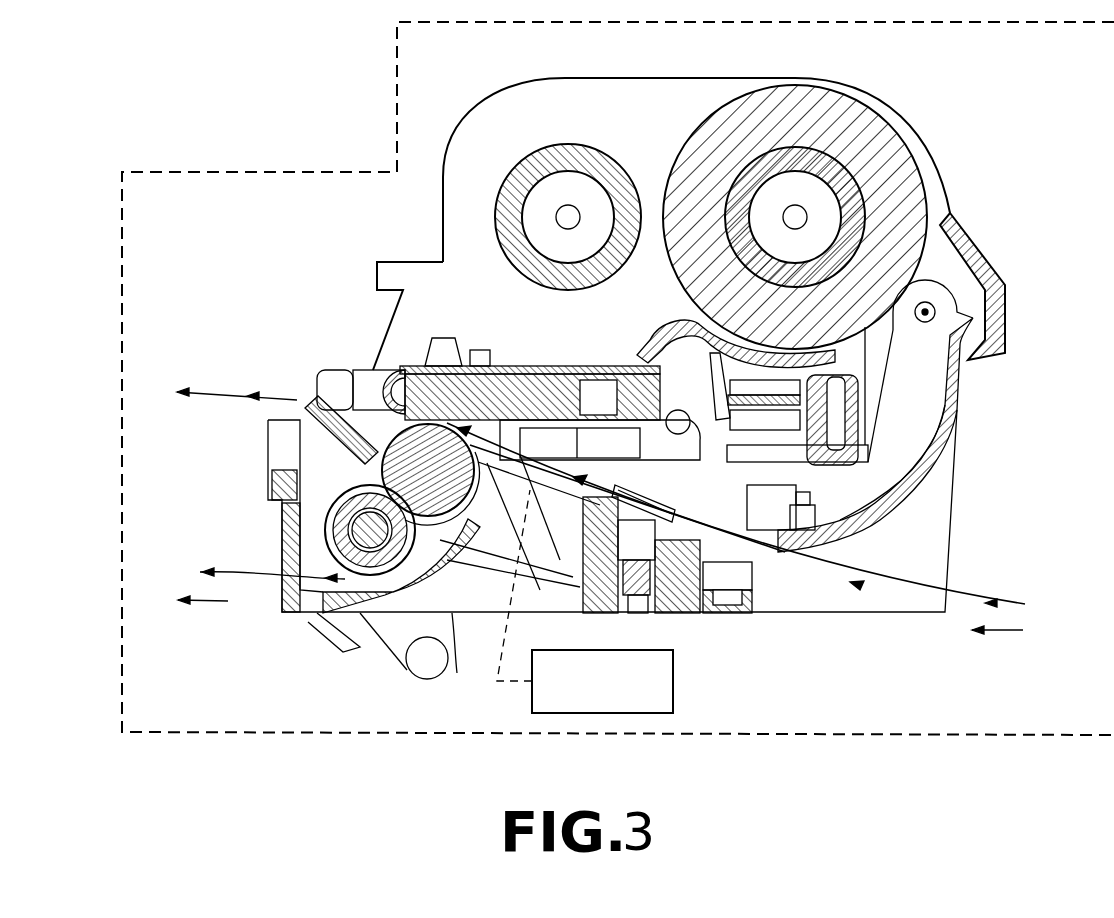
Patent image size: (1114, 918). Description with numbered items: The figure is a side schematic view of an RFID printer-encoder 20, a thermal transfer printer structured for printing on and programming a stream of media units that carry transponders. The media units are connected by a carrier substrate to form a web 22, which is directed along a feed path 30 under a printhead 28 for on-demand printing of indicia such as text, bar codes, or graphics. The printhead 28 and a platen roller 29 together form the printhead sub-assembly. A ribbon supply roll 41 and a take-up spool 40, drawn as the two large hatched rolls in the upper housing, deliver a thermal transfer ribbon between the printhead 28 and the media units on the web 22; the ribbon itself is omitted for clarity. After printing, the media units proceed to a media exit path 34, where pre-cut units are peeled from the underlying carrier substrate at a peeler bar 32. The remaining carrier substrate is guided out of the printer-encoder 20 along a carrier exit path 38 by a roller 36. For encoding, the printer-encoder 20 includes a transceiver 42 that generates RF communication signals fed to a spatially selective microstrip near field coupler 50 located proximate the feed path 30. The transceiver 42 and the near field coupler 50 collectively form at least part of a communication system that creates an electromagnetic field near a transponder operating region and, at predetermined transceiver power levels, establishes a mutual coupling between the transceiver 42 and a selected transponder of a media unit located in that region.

The RFID printer-encoder 20 is at (243, 170).
The web 22 is at (759, 520).
The printhead 28 is at (410, 382).
The platen roller 29 is at (322, 507).
The feed path 30 is at (1021, 631).
The peeler bar 32 is at (345, 455).
The media exit path 34 is at (217, 392).
The roller 36 is at (305, 545).
The carrier exit path 38 is at (183, 600).
The take-up spool 40 is at (590, 150).
The ribbon supply roll 41 is at (860, 118).
The transceiver 42 is at (585, 601).
The near field coupler 50 is at (473, 520).